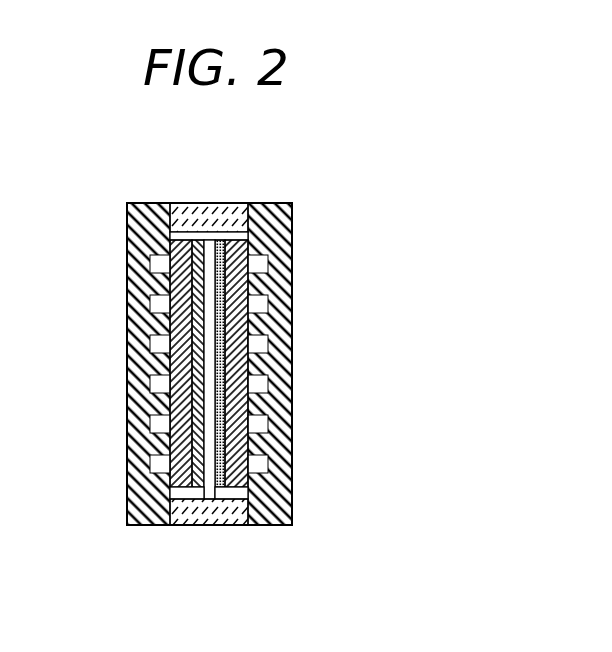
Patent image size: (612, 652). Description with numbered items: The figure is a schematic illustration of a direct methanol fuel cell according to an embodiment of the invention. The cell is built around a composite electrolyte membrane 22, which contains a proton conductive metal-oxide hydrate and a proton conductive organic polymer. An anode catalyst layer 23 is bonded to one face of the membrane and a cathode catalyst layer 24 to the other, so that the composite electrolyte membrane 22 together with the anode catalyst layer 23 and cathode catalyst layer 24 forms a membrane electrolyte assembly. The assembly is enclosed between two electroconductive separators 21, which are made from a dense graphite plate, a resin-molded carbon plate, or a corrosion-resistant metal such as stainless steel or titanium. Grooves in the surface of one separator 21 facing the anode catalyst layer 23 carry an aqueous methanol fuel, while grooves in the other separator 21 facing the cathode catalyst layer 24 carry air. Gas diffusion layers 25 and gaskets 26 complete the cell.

The separator 21 is at (292, 232).
The composite electrolyte membrane 22 is at (208, 369).
The anode catalyst layer 23 is at (172, 286).
The cathode catalyst layer 24 is at (223, 417).
The gas diffusion layer 25 is at (185, 500).
The gasket 26 is at (212, 212).